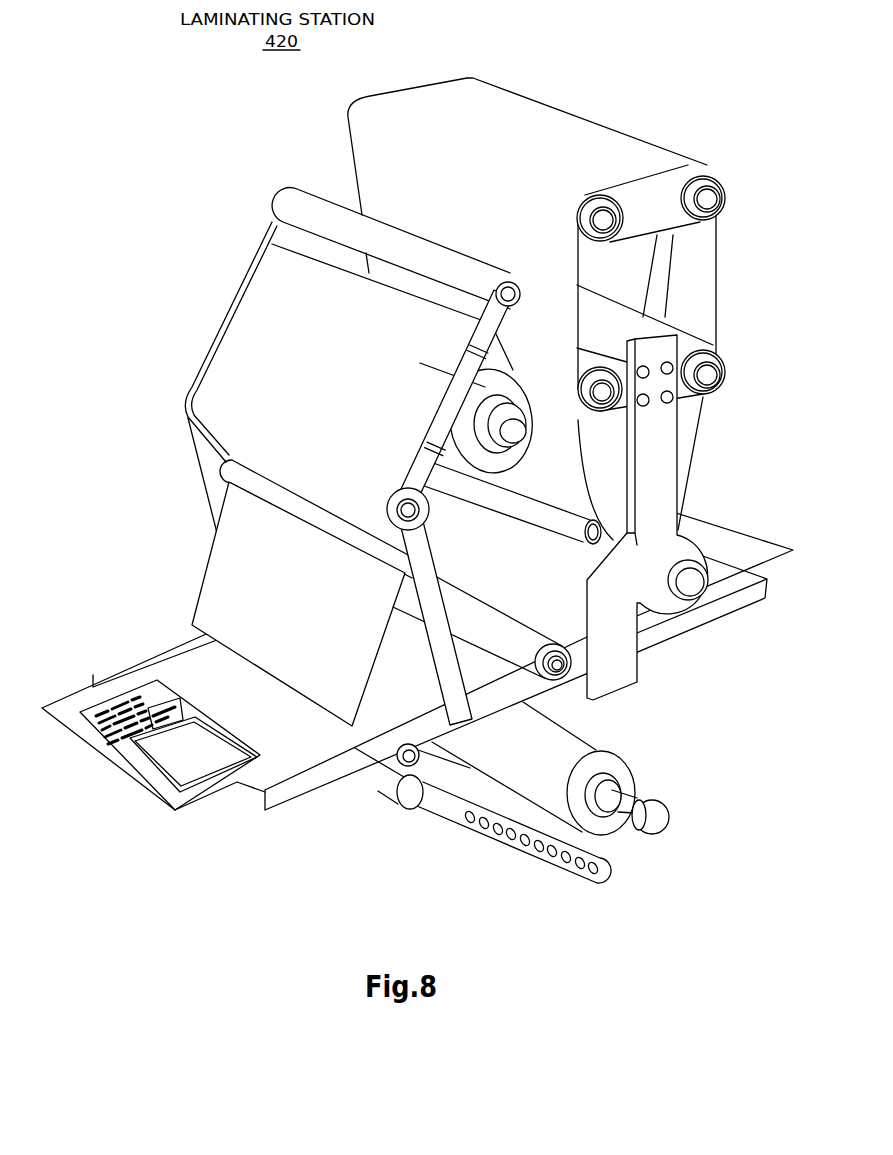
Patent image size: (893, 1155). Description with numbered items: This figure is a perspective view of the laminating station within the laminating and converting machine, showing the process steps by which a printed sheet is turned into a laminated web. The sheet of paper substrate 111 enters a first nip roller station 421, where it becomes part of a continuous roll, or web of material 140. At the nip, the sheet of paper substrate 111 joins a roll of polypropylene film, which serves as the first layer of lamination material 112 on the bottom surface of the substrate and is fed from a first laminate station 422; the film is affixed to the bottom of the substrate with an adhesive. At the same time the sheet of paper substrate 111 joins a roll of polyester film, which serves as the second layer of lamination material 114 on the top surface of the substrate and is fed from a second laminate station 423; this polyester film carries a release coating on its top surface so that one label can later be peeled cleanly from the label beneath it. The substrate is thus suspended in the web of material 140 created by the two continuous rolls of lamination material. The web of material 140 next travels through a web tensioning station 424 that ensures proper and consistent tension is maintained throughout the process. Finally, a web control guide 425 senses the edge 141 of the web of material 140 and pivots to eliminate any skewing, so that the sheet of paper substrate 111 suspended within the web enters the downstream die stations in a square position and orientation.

The sheet of paper substrate 111 is at (127, 757).
The first layer of lamination material 112 is at (270, 708).
The second layer of lamination material 114 is at (257, 357).
The web of material 140 is at (395, 160).
The edge of the web of material 141 is at (720, 313).
The first nip roller station 421 is at (546, 688).
The first laminate station 422 is at (637, 775).
The second laminate station 423 is at (463, 373).
The web tensioning station 424 is at (634, 203).
The web control guide 425 is at (668, 448).